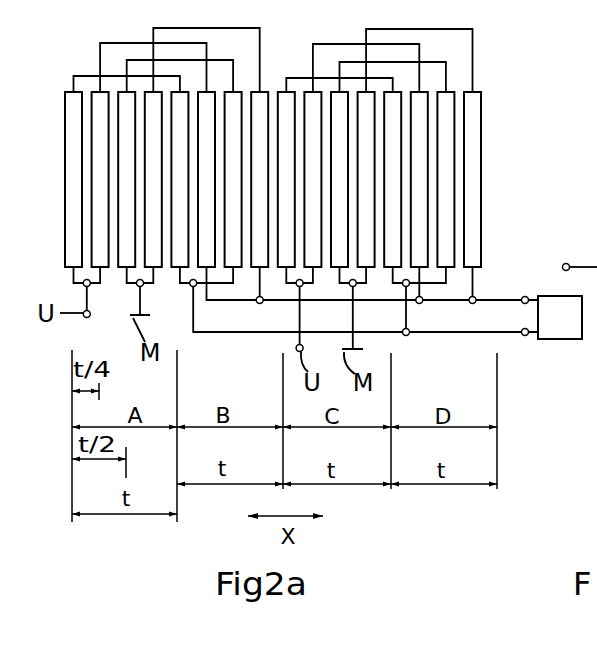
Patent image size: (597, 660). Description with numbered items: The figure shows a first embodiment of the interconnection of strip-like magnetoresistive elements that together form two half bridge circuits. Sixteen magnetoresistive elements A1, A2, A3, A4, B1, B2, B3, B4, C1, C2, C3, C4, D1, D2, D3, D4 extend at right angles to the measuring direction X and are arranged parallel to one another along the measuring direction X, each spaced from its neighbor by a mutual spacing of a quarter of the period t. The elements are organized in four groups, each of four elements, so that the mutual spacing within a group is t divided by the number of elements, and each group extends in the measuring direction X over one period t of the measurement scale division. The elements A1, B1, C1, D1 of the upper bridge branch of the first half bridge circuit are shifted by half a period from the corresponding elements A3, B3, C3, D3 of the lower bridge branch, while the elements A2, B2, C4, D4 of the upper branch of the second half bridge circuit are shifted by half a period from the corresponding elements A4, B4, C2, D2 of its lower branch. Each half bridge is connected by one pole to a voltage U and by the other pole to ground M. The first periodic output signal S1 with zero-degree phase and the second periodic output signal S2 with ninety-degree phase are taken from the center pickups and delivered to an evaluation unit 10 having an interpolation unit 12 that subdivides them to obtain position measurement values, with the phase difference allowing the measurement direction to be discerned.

The evaluation unit 10 is at (563, 340).
The interpolation unit 12 is at (572, 333).
The first periodic output signal S1 is at (540, 366).
The second periodic output signal S2 is at (525, 297).
The magnetoresistive element A1 is at (73, 179).
The magnetoresistive element A2 is at (100, 179).
The magnetoresistive element A3 is at (126, 179).
The magnetoresistive element A4 is at (153, 179).
The magnetoresistive element B1 is at (179, 179).
The magnetoresistive element B2 is at (206, 179).
The magnetoresistive element B3 is at (233, 179).
The magnetoresistive element B4 is at (259, 179).
The magnetoresistive element C1 is at (286, 179).
The magnetoresistive element C2 is at (312, 179).
The magnetoresistive element C3 is at (339, 179).
The magnetoresistive element C4 is at (366, 179).
The magnetoresistive element D1 is at (392, 179).
The magnetoresistive element D2 is at (419, 179).
The magnetoresistive element D3 is at (445, 179).
The magnetoresistive element D4 is at (472, 179).